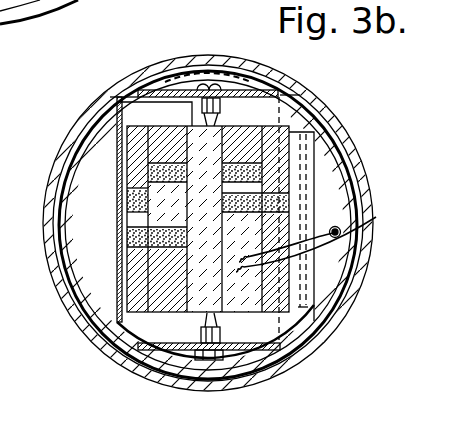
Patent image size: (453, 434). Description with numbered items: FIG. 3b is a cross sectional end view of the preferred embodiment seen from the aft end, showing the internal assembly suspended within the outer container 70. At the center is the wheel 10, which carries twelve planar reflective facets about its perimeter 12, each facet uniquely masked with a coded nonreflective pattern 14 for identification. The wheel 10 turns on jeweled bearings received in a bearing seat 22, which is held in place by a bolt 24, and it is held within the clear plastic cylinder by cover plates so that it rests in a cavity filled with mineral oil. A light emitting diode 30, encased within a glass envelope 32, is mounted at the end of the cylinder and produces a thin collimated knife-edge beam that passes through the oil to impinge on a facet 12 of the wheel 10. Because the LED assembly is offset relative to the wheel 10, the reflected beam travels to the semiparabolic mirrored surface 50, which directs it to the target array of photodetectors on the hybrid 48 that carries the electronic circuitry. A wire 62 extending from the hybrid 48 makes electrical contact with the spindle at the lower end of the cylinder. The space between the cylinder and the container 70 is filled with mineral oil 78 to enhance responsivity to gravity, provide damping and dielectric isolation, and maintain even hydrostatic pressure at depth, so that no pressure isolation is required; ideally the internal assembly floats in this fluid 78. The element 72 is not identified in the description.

The wheel 10 is at (173, 313).
The perimeter facets 12 is at (113, 340).
The coded nonreflective pattern 14 is at (291, 133).
The bearing seat 22 is at (138, 96).
The bolt 24 is at (236, 345).
The light emitting diode 30 is at (258, 352).
The glass envelope 32 is at (241, 92).
The hybrid 48 is at (322, 340).
The mirrored surface 50 is at (118, 151).
The wire 62 is at (376, 217).
The container 70 is at (362, 287).
The ring 72 is at (43, 7).
The mineral oil 78 is at (63, 230).